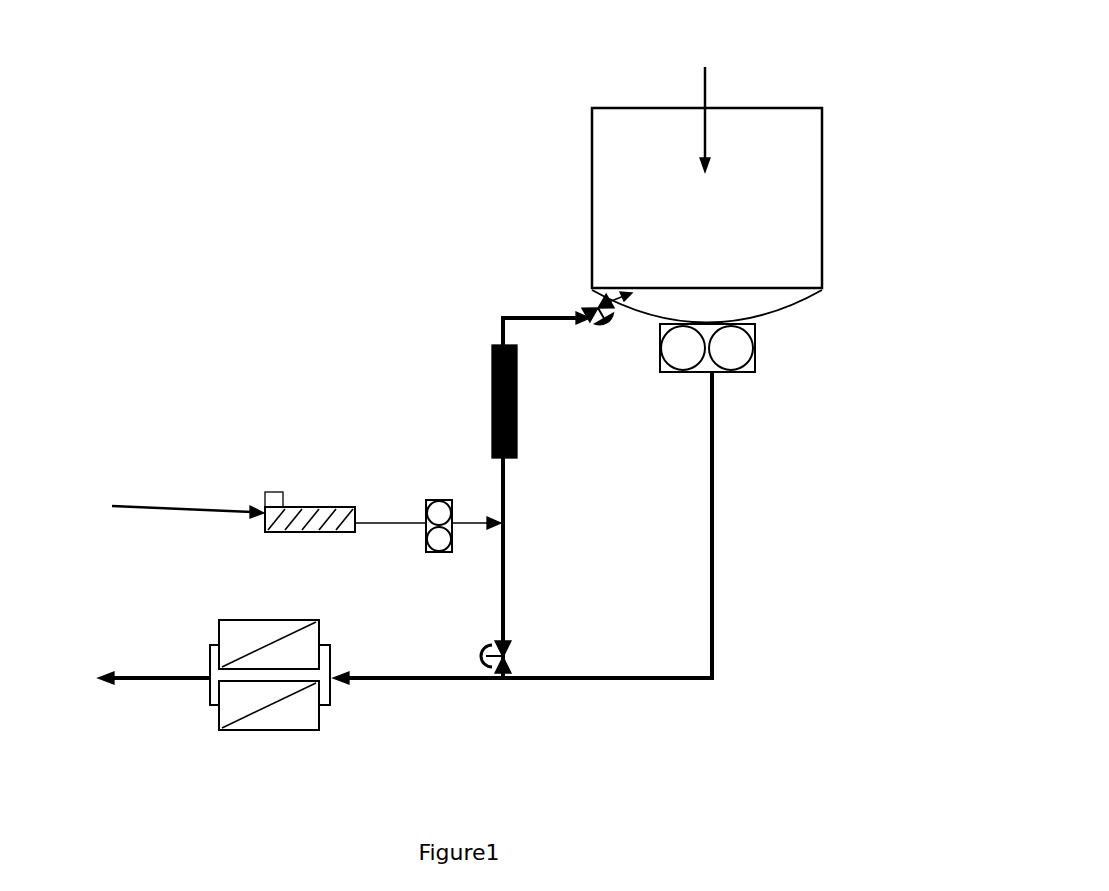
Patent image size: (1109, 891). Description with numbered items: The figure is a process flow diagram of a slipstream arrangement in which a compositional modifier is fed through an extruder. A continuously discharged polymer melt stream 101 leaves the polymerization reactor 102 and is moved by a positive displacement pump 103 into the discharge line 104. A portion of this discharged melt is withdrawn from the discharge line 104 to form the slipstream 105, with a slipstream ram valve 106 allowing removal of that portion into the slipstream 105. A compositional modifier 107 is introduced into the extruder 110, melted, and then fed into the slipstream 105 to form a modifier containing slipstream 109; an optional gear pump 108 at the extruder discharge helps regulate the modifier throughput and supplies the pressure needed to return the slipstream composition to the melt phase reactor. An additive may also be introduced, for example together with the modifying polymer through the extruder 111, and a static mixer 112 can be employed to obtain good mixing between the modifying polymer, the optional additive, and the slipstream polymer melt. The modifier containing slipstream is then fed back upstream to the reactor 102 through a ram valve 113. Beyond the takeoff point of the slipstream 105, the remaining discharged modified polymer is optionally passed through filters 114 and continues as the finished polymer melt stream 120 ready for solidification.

The continuously discharged polymer melt stream 101 is at (705, 103).
The polymerization reactor 102 is at (570, 165).
The positive displacement pump 103 is at (770, 358).
The discharge line 104 is at (737, 578).
The slipstream 105 is at (527, 618).
The slipstream ram valve 106 is at (522, 656).
The compositional modifier 107 is at (262, 483).
The gear pump 108 is at (439, 477).
The modifier containing slipstream 109 is at (510, 503).
The extruder 110 is at (161, 501).
The extruder 111 is at (318, 490).
The static mixer 112 is at (535, 436).
The ram valve 113 is at (578, 302).
The filters 114 is at (236, 602).
The finished polymer melt stream 120 is at (122, 667).